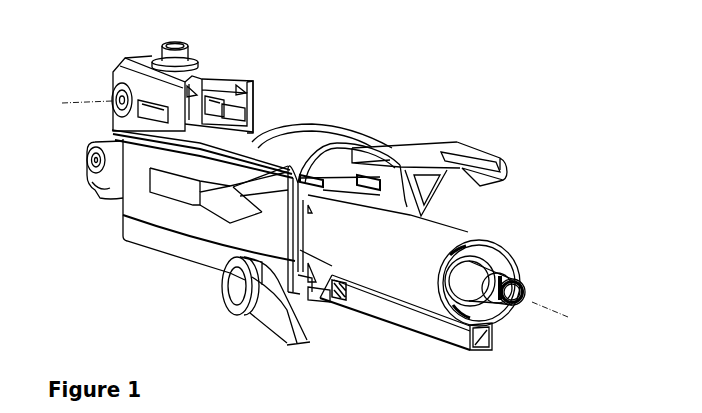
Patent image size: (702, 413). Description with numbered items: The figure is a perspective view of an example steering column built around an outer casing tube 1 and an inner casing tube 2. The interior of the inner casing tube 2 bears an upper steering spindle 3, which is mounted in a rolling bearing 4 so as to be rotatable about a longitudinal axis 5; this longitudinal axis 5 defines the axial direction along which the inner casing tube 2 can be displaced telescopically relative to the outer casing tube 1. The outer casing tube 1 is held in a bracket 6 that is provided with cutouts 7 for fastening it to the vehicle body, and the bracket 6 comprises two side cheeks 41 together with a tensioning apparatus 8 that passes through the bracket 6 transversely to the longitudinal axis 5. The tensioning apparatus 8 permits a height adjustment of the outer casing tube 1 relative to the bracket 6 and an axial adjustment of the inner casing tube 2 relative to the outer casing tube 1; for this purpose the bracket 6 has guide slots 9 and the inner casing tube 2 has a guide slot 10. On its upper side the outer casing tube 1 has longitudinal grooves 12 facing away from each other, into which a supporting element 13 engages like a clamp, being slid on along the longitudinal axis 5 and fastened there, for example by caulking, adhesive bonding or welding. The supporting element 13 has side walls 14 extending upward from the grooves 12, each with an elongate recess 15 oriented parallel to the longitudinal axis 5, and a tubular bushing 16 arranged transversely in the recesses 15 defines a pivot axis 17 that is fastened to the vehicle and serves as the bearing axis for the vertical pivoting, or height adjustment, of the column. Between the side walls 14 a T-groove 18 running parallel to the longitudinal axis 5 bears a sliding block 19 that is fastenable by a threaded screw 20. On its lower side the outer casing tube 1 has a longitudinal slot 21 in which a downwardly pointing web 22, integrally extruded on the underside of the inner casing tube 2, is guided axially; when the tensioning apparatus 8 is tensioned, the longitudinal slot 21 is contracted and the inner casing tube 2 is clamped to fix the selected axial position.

The casing tube 1 is at (150, 236).
The inner casing tube 2 is at (457, 238).
The upper steering spindle 3 is at (487, 277).
The rolling bearing 4 is at (490, 330).
The longitudinal axis 5 is at (568, 317).
The bracket 6 is at (428, 157).
The cutouts 7 is at (253, 140).
The tensioning apparatus 8 is at (233, 329).
The guide slots 9 is at (250, 235).
The guide slot 10 is at (341, 302).
The longitudinal grooves 12 is at (360, 173).
The supporting element 13 is at (248, 92).
The side walls 14 is at (113, 72).
The elongate recess 15 is at (157, 110).
The tubular bushing 16 is at (133, 102).
The pivot axis 17 is at (62, 103).
The T-groove 18 is at (210, 120).
The sliding block 19 is at (197, 66).
The threaded screw 20 is at (176, 46).
The longitudinal slot 21 is at (330, 295).
The web 22 is at (382, 308).
The side cheeks 41 is at (228, 248).